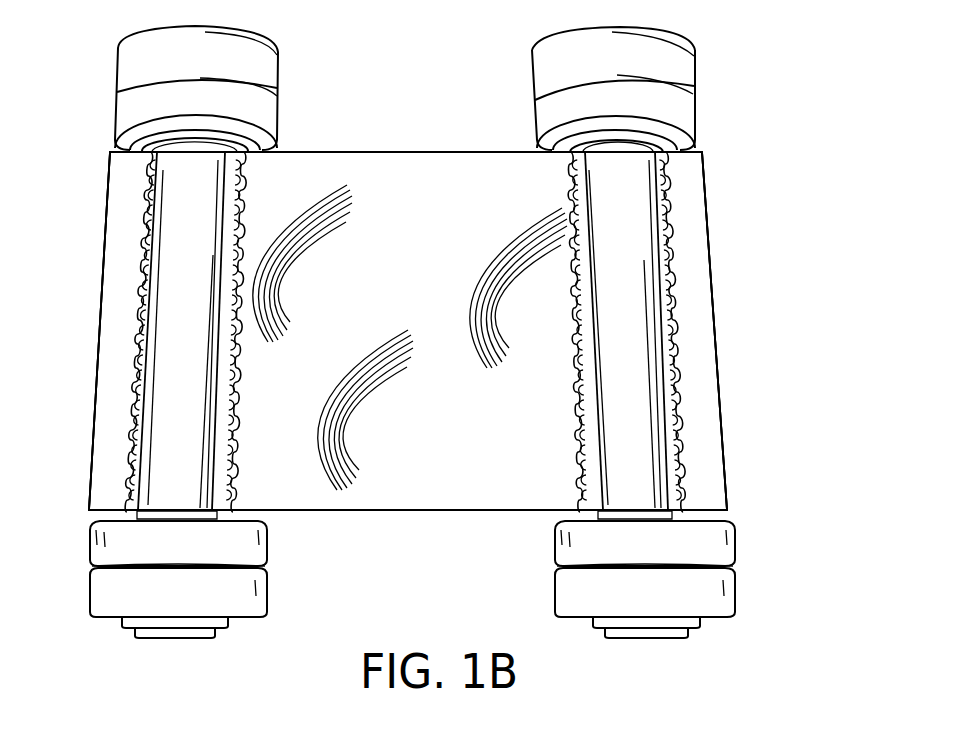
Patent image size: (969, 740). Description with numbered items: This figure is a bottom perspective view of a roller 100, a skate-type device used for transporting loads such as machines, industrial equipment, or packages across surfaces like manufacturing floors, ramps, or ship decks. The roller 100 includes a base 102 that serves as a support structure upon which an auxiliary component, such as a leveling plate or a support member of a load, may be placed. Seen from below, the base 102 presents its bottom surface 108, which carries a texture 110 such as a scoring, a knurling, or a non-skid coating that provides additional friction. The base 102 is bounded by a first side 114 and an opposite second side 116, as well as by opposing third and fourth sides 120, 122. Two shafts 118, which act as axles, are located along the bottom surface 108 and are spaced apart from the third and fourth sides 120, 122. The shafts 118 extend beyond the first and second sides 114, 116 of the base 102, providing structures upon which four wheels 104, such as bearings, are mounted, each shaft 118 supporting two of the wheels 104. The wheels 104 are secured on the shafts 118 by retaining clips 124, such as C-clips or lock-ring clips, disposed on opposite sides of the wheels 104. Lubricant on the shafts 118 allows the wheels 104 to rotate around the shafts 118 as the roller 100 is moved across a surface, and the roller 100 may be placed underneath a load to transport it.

The roller 100 is at (417, 343).
The base 102 is at (706, 245).
The wheels 104 is at (545, 48).
The bottom surface 108 is at (412, 261).
The texture 110 is at (483, 372).
The first side 114 is at (373, 512).
The second side 116 is at (383, 147).
The shafts 118 is at (168, 380).
The third side 120 is at (98, 238).
The fourth side 122 is at (726, 360).
The retaining clips 124 is at (713, 521).